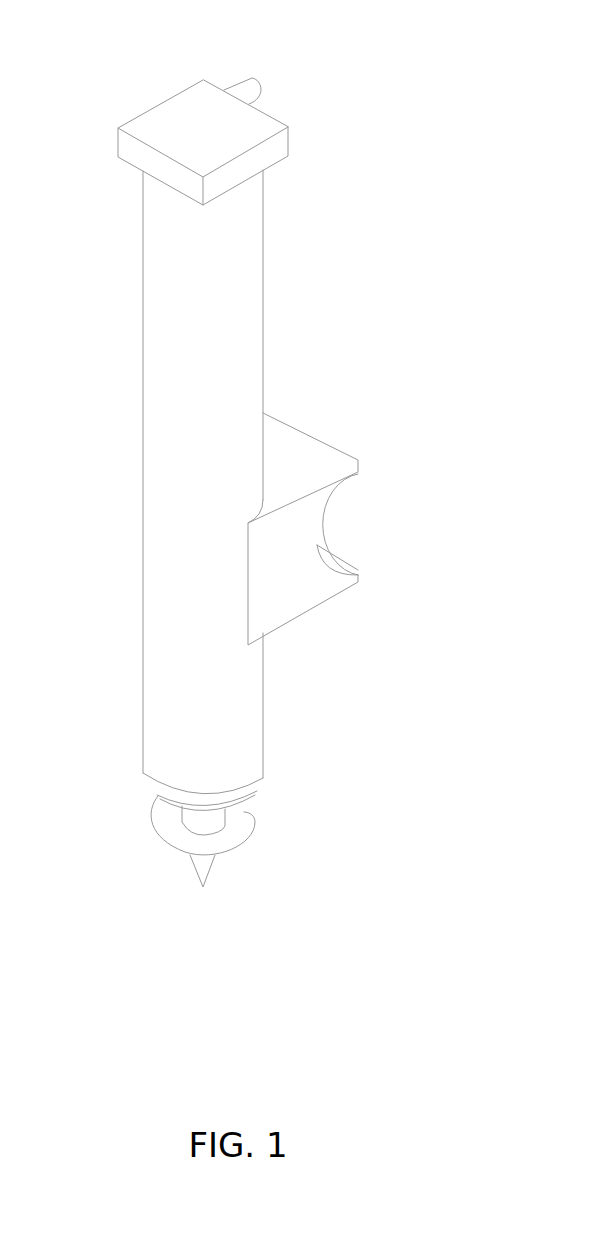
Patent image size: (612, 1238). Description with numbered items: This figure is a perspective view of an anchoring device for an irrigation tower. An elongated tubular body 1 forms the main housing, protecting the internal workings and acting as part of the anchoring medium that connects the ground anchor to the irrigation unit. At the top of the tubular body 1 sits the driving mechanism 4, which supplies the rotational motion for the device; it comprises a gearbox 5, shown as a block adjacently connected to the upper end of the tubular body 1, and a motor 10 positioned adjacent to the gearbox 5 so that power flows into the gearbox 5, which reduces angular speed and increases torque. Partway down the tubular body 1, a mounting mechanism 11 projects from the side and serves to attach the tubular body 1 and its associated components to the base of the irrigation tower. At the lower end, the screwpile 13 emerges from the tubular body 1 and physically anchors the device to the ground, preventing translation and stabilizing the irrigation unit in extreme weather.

The tubular body 1 is at (200, 494).
The driving mechanism 4 is at (333, 117).
The gearbox 5 is at (130, 128).
The motor 10 is at (252, 78).
The mounting mechanism 11 is at (345, 458).
The screwpile 13 is at (205, 867).